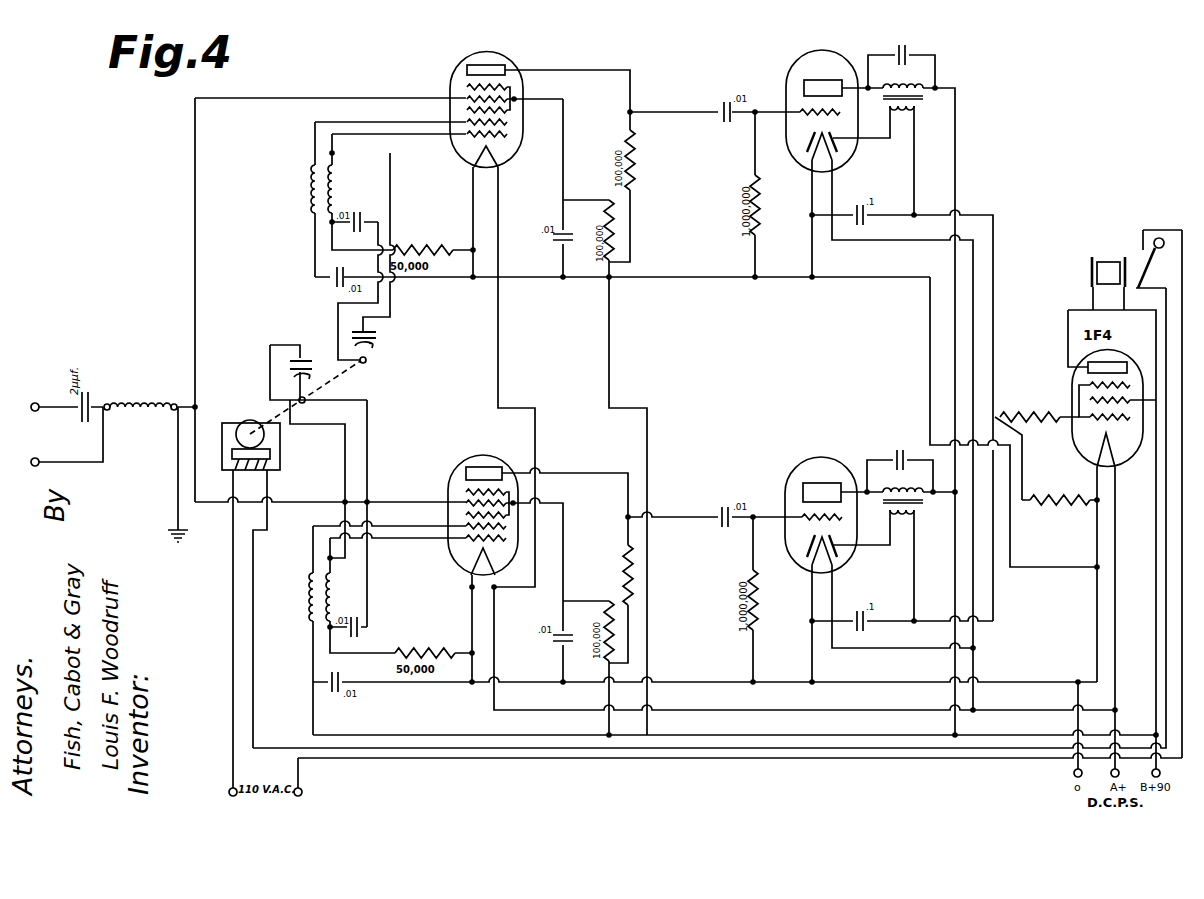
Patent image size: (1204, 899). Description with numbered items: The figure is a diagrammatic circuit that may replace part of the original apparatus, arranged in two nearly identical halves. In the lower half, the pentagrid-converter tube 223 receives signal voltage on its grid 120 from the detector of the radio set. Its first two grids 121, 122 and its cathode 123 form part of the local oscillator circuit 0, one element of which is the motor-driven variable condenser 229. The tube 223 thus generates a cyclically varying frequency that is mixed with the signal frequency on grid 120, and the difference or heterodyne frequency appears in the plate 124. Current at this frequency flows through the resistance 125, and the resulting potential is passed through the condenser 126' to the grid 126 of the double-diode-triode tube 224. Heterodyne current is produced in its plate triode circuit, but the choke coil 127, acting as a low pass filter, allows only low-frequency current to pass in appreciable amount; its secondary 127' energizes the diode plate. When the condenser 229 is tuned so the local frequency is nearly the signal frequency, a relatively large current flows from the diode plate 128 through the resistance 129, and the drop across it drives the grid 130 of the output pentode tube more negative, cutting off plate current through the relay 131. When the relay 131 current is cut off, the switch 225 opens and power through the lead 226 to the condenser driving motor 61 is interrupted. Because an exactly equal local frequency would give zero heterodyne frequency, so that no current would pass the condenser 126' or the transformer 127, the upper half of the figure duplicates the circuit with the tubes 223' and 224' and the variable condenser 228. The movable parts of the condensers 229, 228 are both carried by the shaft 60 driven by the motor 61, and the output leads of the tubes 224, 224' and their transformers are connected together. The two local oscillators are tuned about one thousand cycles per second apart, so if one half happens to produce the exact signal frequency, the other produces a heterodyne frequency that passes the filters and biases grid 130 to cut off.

The pentagrid-converter tube 223' is at (510, 98).
The double-diode-triode tube 224' is at (807, 100).
The motor-driven variable condenser 229 is at (303, 358).
The variable condenser 228 is at (380, 341).
The shaft 60 is at (335, 380).
The condenser driving motor 61 is at (250, 420).
The local oscillator circuit 0 is at (299, 591).
The plate 124 is at (467, 472).
The grid 120 is at (465, 493).
The grid 122 is at (465, 527).
The grid 121 is at (465, 540).
The cathode 123 is at (492, 562).
The pentagrid-converter tube 223 is at (483, 532).
The resistance 125 is at (621, 562).
The condenser 126' is at (696, 506).
The grid 126 is at (782, 493).
The double-diode-triode tube 224 is at (789, 519).
The choke coil 127 is at (885, 457).
The secondary 127' is at (873, 565).
The diode plate 128 is at (820, 572).
The grid 130 is at (1090, 416).
The resistance 129 is at (1052, 494).
The relay 131 is at (1106, 262).
The switch 225 is at (1163, 238).
The lead 226 is at (1182, 557).